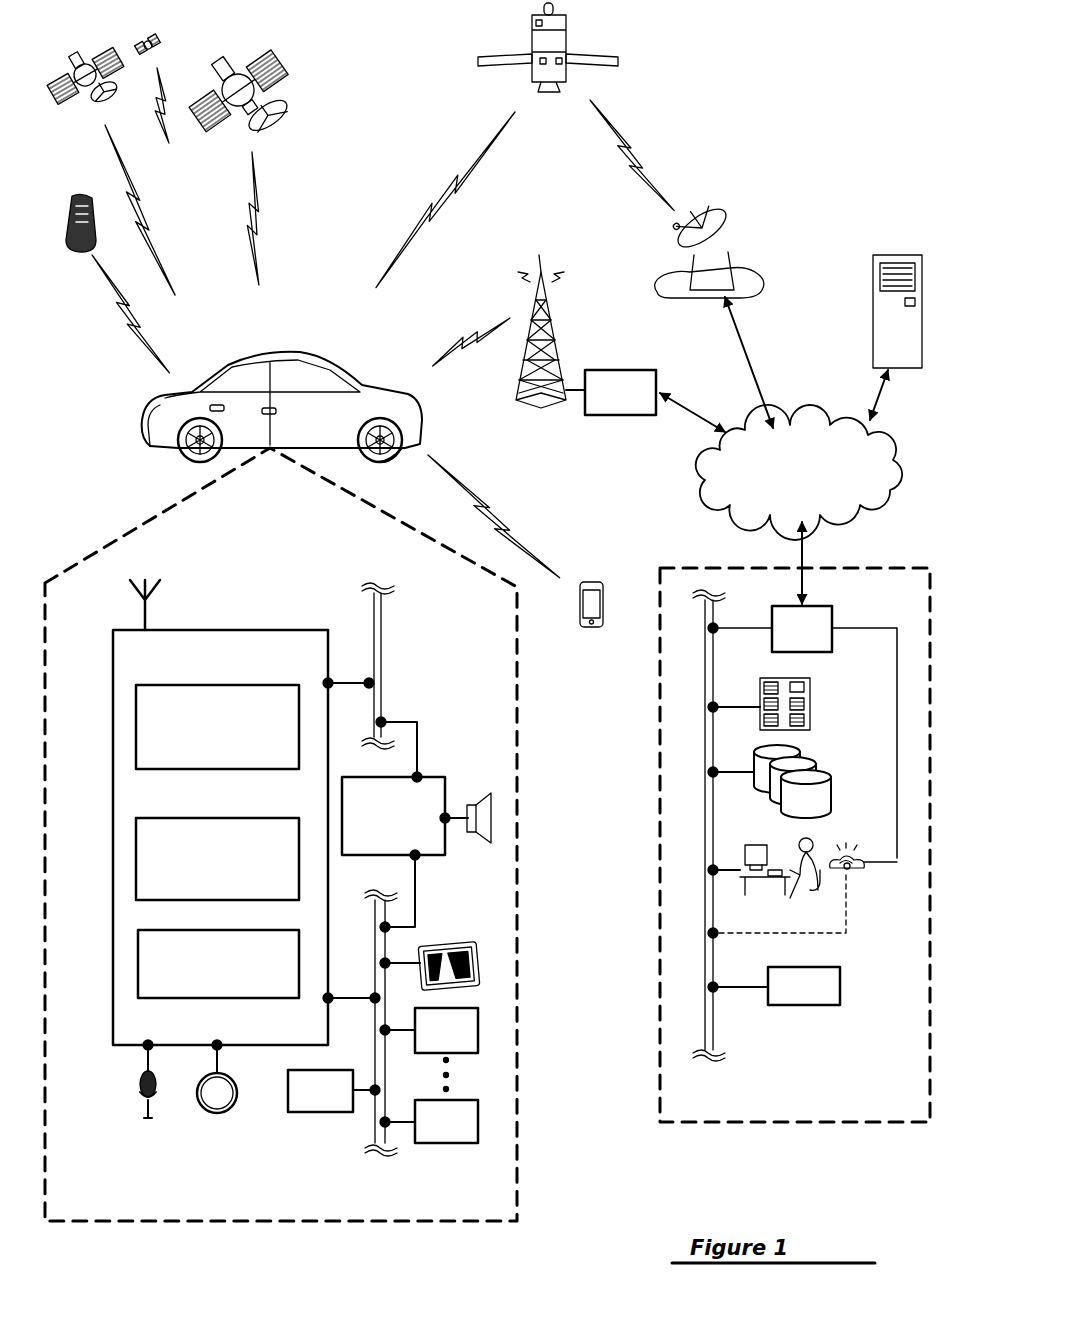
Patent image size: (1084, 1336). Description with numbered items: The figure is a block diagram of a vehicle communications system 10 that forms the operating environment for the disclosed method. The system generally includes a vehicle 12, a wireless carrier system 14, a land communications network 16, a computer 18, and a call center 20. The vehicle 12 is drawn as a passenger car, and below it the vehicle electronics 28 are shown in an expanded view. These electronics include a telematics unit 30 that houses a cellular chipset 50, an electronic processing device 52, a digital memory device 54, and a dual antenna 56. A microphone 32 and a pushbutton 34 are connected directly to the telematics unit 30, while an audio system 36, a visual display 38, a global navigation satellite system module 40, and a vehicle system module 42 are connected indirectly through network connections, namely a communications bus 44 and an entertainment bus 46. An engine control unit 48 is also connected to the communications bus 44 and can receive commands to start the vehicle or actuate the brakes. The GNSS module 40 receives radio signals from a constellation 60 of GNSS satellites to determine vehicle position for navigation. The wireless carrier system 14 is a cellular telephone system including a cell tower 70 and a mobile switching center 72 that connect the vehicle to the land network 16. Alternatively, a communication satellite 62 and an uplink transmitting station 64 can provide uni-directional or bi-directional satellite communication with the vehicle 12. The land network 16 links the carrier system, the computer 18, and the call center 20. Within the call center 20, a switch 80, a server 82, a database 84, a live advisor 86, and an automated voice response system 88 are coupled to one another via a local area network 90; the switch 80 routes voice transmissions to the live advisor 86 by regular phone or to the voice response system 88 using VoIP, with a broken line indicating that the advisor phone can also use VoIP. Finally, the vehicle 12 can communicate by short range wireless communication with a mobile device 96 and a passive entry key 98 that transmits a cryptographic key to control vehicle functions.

The vehicle communications system 10 is at (830, 48).
The vehicle 12 is at (147, 420).
The wireless carrier system 14 is at (530, 420).
The land communications network 16 is at (900, 468).
The computer 18 is at (922, 326).
The call center 20 is at (785, 1122).
The vehicle electronics 28 is at (272, 1222).
The telematics unit 30 is at (220, 815).
The microphone 32 is at (138, 1090).
The pushbutton 34 is at (206, 1110).
The audio system 36 is at (448, 772).
The visual display 38 is at (444, 942).
The global navigation satellite system module 40 is at (478, 1032).
The vehicle system module 42 is at (432, 1145).
The communications bus 44 is at (373, 1125).
The entertainment bus 46 is at (385, 648).
The engine control unit 48 is at (288, 1105).
The cellular chipset 50 is at (217, 727).
The electronic processing device 52 is at (217, 859).
The digital memory device 54 is at (218, 964).
The dual antenna 56 is at (141, 615).
The constellation of GNSS satellites 60 is at (315, 85).
The communication satellite 62 is at (566, 24).
The uplink transmitting station 64 is at (738, 268).
The cell tower 70 is at (548, 330).
The mobile switching center 72 is at (620, 370).
The switch 80 is at (802, 732).
The server 82 is at (812, 700).
The database 84 is at (832, 790).
The live advisor 86 is at (778, 893).
The automated voice response system 88 is at (840, 985).
The local area network 90 is at (713, 1030).
The mobile device 96 is at (603, 618).
The passive entry key 98 is at (70, 200).